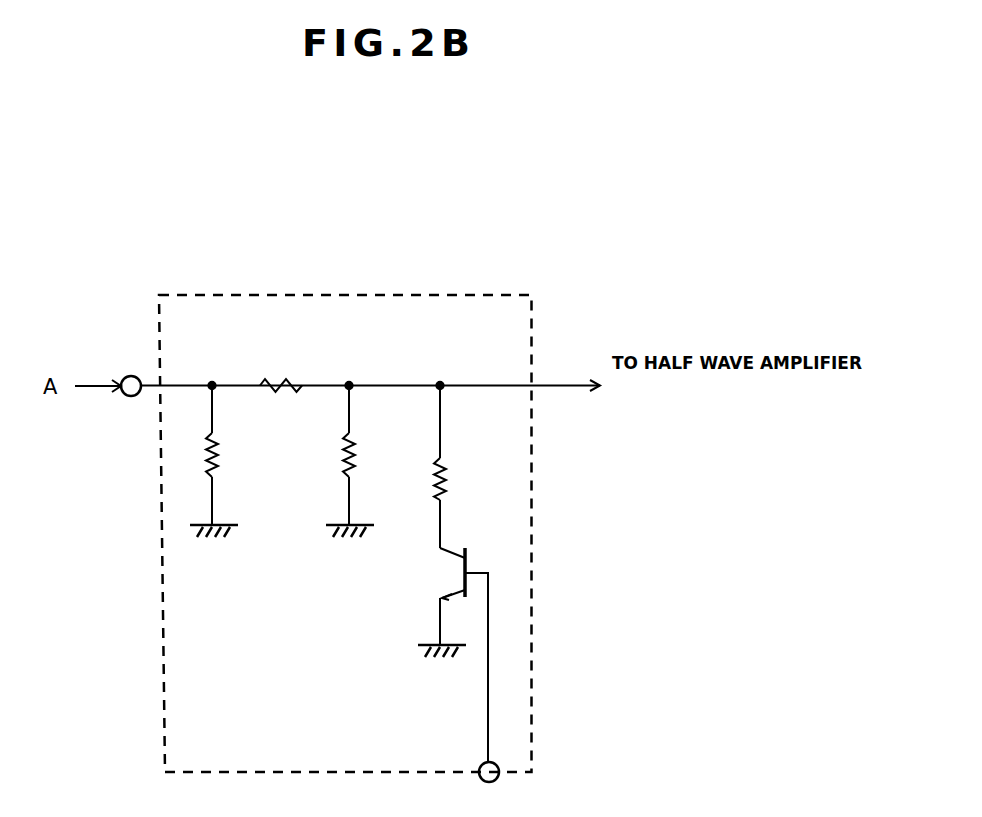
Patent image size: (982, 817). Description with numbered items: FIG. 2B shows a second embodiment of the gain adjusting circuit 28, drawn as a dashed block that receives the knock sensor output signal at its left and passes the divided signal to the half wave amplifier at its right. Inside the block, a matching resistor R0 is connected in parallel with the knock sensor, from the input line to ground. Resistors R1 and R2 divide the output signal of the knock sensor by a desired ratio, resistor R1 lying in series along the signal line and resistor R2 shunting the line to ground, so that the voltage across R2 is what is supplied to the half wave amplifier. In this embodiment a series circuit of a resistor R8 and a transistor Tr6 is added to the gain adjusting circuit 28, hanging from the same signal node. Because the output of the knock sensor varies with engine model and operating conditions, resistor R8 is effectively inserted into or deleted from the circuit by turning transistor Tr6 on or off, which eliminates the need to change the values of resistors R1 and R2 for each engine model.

The gain adjusting circuit 28 is at (301, 294).
The matching resistor R0 is at (231, 455).
The resistor R1 is at (281, 372).
The resistor R2 is at (370, 455).
The resistor R8 is at (459, 488).
The transistor Tr6 is at (437, 573).